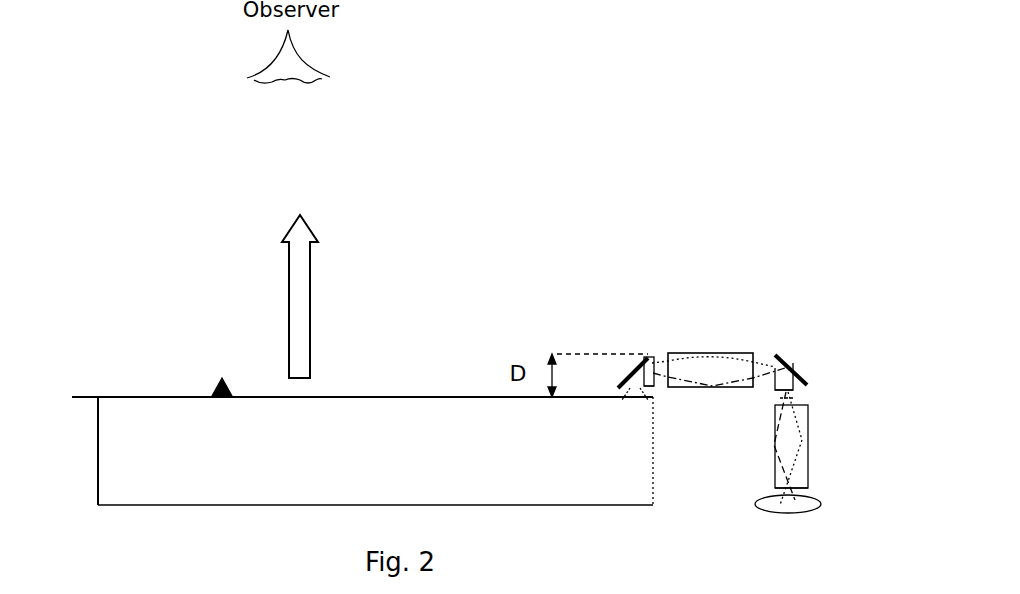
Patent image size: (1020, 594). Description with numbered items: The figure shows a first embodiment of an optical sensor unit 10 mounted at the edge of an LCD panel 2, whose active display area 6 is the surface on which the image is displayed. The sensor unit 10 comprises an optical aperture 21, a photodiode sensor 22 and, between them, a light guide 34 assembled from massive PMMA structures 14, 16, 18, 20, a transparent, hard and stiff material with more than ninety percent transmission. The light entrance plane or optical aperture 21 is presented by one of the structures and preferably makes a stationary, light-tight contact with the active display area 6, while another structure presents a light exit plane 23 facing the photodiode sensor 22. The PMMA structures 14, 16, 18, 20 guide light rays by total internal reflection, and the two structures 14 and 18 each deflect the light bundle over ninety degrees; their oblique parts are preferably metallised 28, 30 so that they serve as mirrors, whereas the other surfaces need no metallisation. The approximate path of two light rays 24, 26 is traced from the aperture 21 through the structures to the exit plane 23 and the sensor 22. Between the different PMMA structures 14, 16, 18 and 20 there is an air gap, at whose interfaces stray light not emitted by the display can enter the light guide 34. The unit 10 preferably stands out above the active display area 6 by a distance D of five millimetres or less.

The LCD panel 2 is at (137, 454).
The active display area 6 is at (212, 386).
The optical sensor unit 10 is at (762, 325).
The PMMA structure 14 is at (648, 357).
The PMMA structure 16 is at (713, 372).
The PMMA structure 18 is at (786, 371).
The PMMA structure 20 is at (800, 470).
The optical aperture 21 is at (641, 389).
The photodiode sensor 22 is at (805, 512).
The light exit plane 23 is at (805, 490).
The light ray 24 is at (795, 399).
The light ray 26 is at (785, 400).
The metallised surface 28 is at (640, 360).
The metallised surface 30 is at (800, 378).
The light guide 34 is at (712, 413).